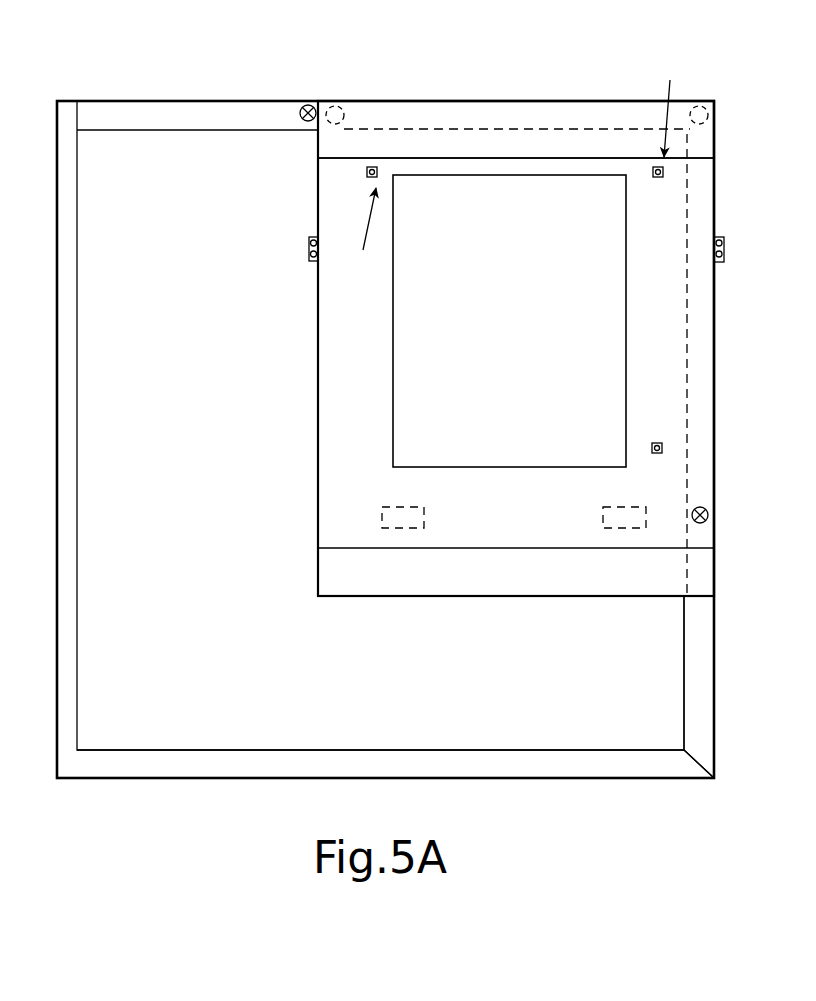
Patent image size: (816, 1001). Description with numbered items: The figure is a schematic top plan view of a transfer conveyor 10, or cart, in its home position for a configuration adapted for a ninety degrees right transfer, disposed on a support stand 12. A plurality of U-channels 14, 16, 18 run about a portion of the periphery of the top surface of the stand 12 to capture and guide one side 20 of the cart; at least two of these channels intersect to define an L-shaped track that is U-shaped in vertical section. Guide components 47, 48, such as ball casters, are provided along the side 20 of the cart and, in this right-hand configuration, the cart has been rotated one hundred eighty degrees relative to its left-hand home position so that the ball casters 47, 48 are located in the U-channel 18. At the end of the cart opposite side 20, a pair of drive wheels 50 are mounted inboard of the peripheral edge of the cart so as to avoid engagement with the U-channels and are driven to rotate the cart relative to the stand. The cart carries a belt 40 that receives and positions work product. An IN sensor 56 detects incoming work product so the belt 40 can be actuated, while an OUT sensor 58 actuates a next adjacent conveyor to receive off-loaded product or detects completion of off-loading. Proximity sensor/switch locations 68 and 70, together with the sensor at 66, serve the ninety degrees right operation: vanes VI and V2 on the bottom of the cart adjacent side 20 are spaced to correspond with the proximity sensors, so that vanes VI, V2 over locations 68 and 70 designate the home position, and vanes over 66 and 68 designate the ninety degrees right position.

The transfer conveyor 10 is at (272, 575).
The stand 12 is at (400, 600).
The U-channel 14 is at (537, 757).
The U-channel 16 is at (697, 679).
The U-channel 18 is at (195, 113).
The side of the cart 20 is at (578, 101).
The belt 40 is at (343, 435).
The guide component 47 is at (708, 117).
The guide component 48 is at (336, 112).
The drive wheel 50 is at (415, 523).
The IN sensor 56 is at (309, 248).
The OUT sensor 58 is at (728, 252).
The proximity sensor/switch 66 is at (657, 443).
The proximity sensor/switch location 68 is at (657, 182).
The proximity sensor/switch location 70 is at (366, 172).
The vane V2 is at (360, 237).
The vane VI is at (672, 82).